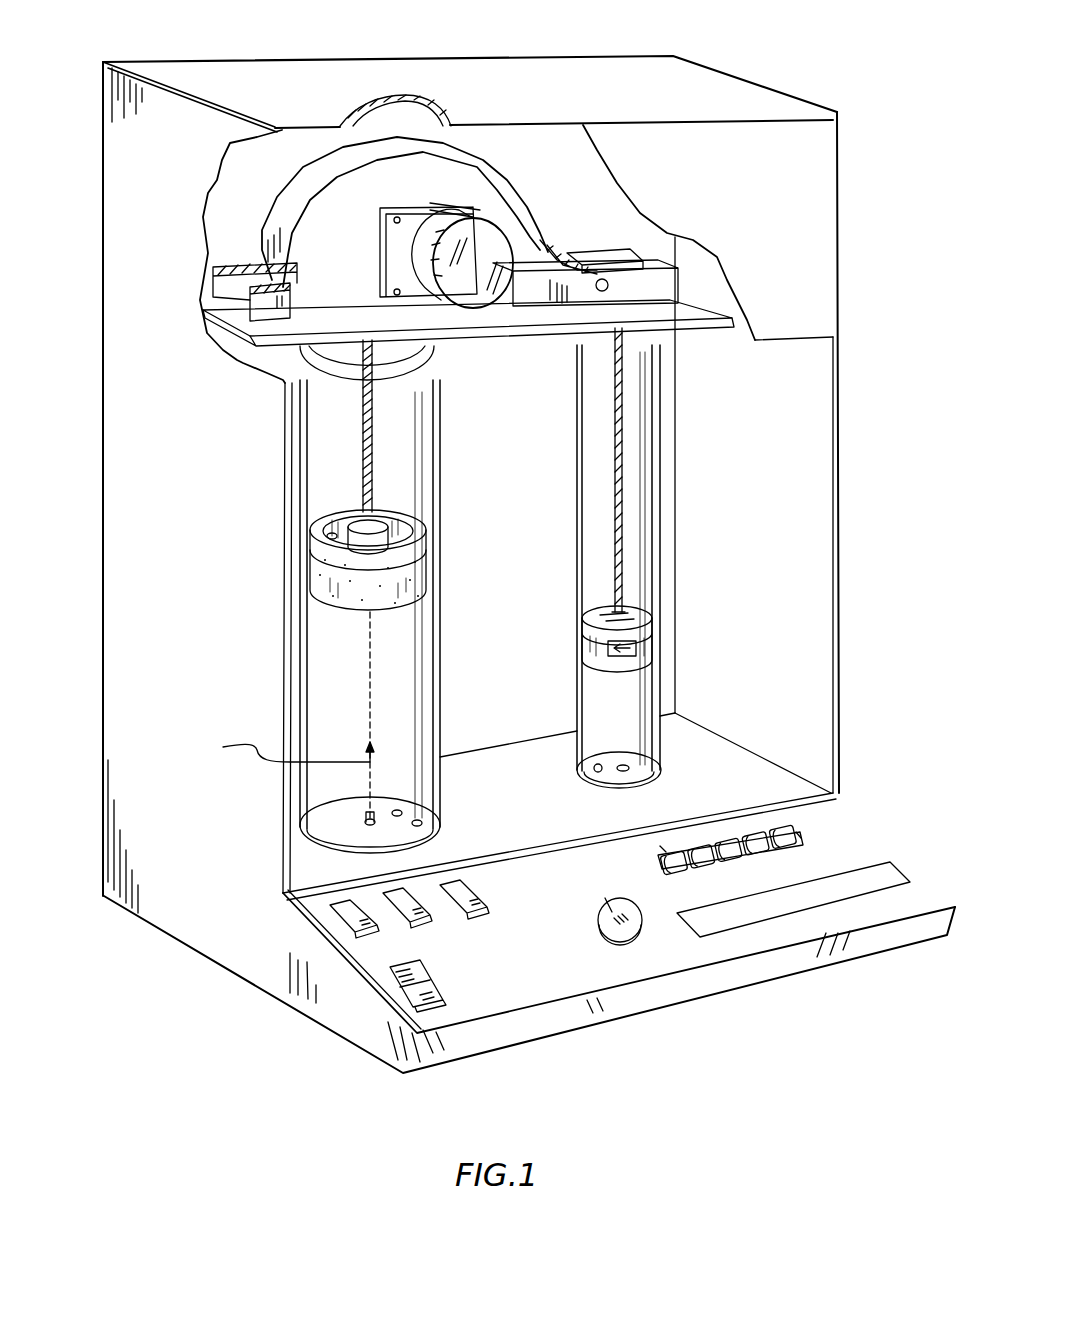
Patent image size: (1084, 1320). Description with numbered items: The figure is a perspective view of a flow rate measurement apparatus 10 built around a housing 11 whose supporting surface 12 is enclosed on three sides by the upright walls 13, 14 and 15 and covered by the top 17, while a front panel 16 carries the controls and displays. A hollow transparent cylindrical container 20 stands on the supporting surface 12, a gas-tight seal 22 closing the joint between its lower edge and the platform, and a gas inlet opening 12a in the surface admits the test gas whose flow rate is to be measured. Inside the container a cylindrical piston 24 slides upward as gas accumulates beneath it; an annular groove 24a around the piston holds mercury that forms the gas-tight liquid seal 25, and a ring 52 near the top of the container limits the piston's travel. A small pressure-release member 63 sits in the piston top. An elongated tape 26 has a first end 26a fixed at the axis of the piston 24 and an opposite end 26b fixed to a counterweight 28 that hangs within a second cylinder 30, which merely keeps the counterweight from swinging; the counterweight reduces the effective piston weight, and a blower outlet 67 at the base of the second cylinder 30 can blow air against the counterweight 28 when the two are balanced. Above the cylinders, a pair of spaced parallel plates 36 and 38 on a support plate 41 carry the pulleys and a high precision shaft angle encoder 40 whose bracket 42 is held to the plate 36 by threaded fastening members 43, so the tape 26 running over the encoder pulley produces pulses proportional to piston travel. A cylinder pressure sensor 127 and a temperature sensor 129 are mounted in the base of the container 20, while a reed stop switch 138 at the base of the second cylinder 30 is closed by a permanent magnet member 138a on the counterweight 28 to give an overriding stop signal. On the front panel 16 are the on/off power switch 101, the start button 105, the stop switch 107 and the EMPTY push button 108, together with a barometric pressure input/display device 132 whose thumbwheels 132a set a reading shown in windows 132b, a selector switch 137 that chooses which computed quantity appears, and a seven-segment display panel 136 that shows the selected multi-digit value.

The flow rate measurement apparatus 10 is at (670, 1057).
The housing 11 is at (841, 453).
The supporting surface 12 is at (520, 811).
The gas inlet opening 12a is at (367, 823).
The upright wall 13 is at (198, 423).
The upright wall 14 is at (527, 427).
The upright wall 15 is at (797, 427).
The front panel 16 is at (550, 987).
The top 17 is at (270, 78).
The cylindrical container 20 is at (433, 653).
The gas-tight seal 22 is at (300, 820).
The piston 24 is at (340, 597).
The annular groove 24a is at (427, 537).
The gas-tight liquid seal 25 is at (420, 547).
The tape 26 is at (560, 252).
The first end of tape 26a is at (366, 527).
The opposite end of tape 26b is at (613, 610).
The counterweight 28 is at (657, 630).
The second cylinder 30 is at (578, 698).
The plate 36 is at (512, 192).
The plate 38 is at (297, 181).
The shaft angle encoder 40 is at (547, 248).
The support plate 41 is at (694, 320).
The bracket 42 is at (380, 248).
The threaded fastening members 43 is at (392, 292).
The ring 52 is at (333, 373).
The vent 63 is at (330, 532).
The outlet 67 is at (595, 766).
The on/off power switch 101 is at (400, 970).
The start button 105 is at (337, 920).
The stop switch 107 is at (398, 896).
The EMPTY push button 108 is at (482, 903).
The cylinder pressure sensor 127 is at (403, 810).
The temperature sensor 129 is at (423, 823).
The barometric pressure input/display device 132 is at (703, 838).
The thumbwheels 132a is at (665, 853).
The windows 132b is at (800, 833).
The display panel 136 is at (712, 932).
The selector switch 137 is at (617, 898).
The stop switch 138 is at (631, 768).
The permanent magnet member 138a is at (640, 660).